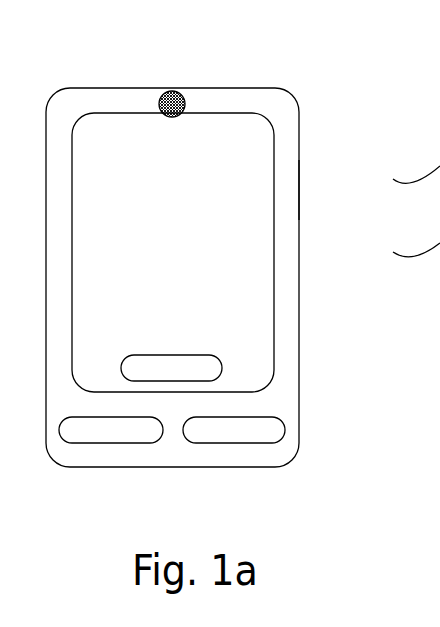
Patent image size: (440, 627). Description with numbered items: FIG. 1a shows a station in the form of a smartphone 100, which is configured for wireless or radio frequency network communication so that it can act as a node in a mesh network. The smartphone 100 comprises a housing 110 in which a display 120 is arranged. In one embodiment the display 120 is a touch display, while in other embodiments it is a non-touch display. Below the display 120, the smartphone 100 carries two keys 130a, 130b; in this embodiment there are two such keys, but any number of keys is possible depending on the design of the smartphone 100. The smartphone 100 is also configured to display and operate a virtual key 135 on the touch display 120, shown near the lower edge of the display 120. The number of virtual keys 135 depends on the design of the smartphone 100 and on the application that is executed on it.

The smartphone 100 is at (69, 82).
The housing 110 is at (299, 190).
The display 120 is at (274, 254).
The virtual key 135 is at (222, 368).
The key 130a is at (112, 443).
The key 130b is at (285, 430).